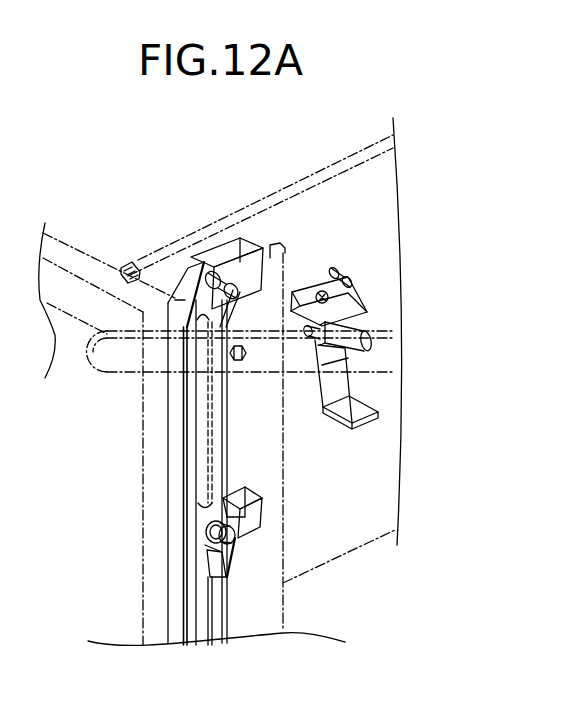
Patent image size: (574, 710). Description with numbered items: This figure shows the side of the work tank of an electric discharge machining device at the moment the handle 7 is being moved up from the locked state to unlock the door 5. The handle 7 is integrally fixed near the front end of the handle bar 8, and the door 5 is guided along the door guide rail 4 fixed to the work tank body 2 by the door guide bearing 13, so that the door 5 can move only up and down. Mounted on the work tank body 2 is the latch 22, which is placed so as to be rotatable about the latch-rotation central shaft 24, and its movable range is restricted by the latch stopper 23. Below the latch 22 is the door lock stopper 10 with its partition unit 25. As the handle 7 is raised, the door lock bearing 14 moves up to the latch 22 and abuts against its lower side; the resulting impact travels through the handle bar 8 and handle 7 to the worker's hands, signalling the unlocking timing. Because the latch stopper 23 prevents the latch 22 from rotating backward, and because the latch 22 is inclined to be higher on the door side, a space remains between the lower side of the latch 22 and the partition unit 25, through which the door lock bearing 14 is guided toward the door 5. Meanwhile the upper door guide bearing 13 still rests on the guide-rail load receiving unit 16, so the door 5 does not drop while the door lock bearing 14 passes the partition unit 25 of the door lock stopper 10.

The work tank body 2 is at (364, 150).
The door guide rail 4 is at (192, 277).
The door 5 is at (143, 567).
The handle 7 is at (70, 345).
The handle bar 8 is at (126, 357).
The door lock stopper 10 is at (372, 405).
The door guide bearing 13 is at (217, 286).
The door lock bearing 14 is at (370, 340).
The guide-rail load receiving unit 16 is at (240, 287).
The latch 22 is at (355, 312).
The latch stopper 23 is at (340, 276).
The latch-rotation central shaft 24 is at (322, 291).
The partition unit 25 is at (334, 383).